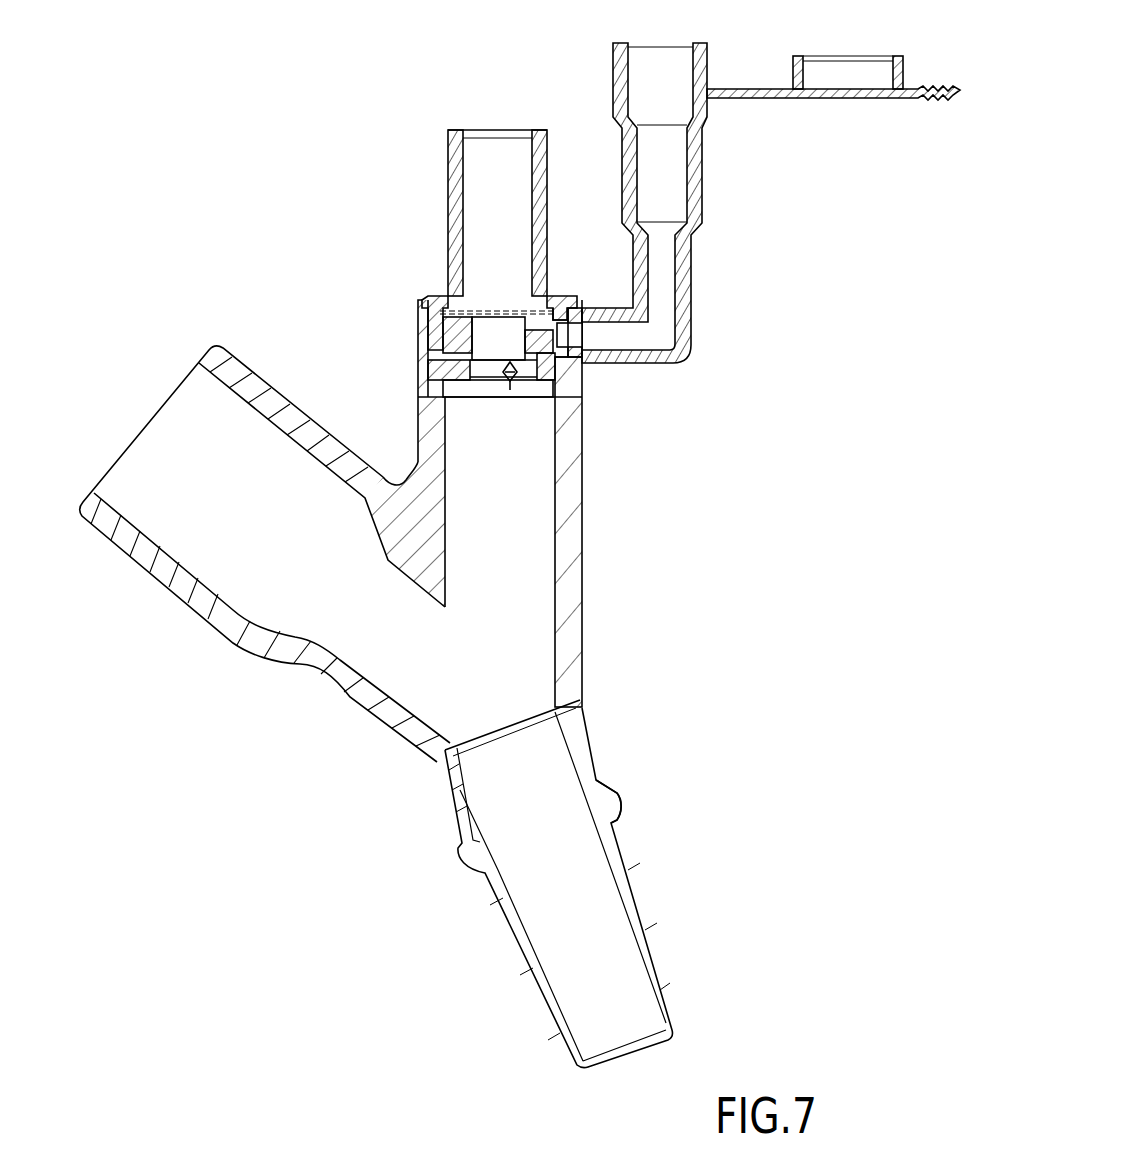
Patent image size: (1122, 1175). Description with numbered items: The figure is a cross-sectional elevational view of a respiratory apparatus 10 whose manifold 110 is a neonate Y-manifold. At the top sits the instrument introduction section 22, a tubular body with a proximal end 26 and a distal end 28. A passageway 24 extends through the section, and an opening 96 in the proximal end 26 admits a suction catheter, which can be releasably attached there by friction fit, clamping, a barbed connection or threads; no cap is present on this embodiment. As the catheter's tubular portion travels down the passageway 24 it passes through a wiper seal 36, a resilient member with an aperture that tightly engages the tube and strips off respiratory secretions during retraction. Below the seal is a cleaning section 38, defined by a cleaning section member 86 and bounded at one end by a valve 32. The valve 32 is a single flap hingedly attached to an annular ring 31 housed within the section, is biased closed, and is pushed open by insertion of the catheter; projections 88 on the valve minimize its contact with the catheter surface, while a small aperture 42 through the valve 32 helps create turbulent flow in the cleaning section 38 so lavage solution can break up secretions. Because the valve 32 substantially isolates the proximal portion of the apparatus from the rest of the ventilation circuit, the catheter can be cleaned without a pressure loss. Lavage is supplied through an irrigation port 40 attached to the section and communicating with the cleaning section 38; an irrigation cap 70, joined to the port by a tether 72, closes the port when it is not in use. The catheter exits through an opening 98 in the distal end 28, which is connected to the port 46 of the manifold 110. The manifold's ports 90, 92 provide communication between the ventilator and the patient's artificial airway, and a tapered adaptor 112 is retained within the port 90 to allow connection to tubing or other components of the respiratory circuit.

The respiratory apparatus 10 is at (183, 122).
The instrument introduction section 22 is at (455, 318).
The passageway 24 is at (495, 202).
The proximal end 26 is at (455, 175).
The distal end 28 is at (437, 375).
The annular ring 31 is at (572, 390).
The valve 32 is at (550, 395).
The wiper seal 36 is at (477, 300).
The cleaning section 38 is at (503, 335).
The irrigation port 40 is at (693, 177).
The aperture 42 is at (502, 383).
The port 46 is at (577, 382).
The irrigation cap 70 is at (852, 98).
The tether 72 is at (762, 92).
The cleaning section member 86 is at (535, 322).
The projection 88 is at (510, 387).
The port 90 is at (607, 775).
The port 92 is at (137, 558).
The opening 96 is at (449, 172).
The opening 98 is at (457, 398).
The manifold 110 is at (578, 513).
The tapered adaptor 112 is at (650, 947).